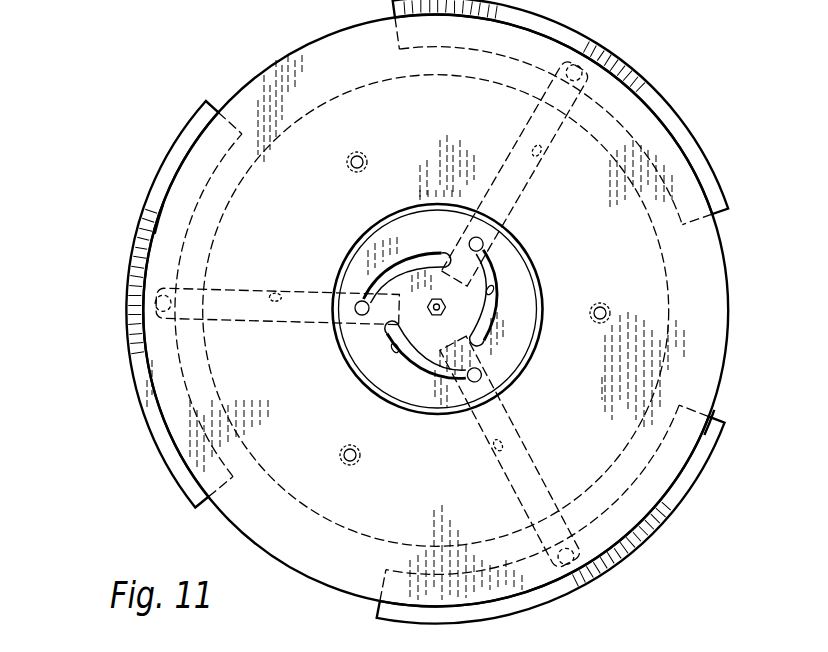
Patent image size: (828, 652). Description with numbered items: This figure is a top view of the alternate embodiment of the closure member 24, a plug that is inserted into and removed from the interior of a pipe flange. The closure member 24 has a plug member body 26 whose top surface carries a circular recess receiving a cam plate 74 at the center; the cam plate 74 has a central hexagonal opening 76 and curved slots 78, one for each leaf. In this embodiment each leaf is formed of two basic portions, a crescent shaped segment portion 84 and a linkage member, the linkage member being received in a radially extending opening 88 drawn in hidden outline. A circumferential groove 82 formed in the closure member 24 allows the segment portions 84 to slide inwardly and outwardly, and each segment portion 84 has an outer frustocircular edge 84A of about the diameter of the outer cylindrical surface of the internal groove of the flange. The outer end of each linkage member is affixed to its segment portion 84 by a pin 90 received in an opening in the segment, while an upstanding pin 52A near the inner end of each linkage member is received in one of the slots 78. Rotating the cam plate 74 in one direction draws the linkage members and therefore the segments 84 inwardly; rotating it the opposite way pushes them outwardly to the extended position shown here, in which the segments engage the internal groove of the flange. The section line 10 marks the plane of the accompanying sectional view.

The section line 10- 10 is at (111, 300).
The closure member 24 is at (728, 160).
The plug member body 26 is at (643, 306).
The upstanding pin 52A is at (357, 333).
The cam plate 74 is at (516, 338).
The central hexagonal opening 76 is at (436, 316).
The curved slots 78 is at (393, 350).
The circumferential groove 82 is at (312, 543).
The crescent shaped segment portion 84 is at (682, 132).
The outer frustocircular edge 84A is at (152, 222).
The radially extending opening 88 is at (285, 297).
The pin 90 is at (163, 298).